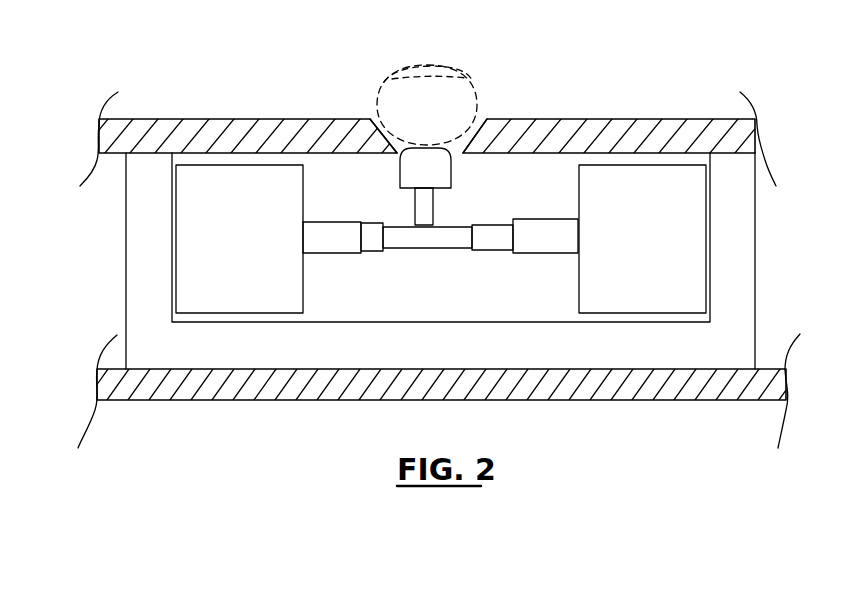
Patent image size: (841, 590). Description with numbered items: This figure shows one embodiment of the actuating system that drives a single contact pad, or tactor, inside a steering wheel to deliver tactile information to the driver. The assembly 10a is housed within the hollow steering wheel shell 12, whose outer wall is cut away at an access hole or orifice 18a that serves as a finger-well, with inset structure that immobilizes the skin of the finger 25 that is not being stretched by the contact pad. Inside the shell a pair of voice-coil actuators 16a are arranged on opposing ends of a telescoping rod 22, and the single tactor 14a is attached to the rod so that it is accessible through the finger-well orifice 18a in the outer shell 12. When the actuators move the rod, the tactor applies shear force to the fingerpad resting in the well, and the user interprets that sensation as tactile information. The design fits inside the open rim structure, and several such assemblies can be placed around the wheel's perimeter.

The sensor assembly 10a is at (90, 93).
The steering wheel shell 12 is at (182, 119).
The sensor head 14a is at (451, 175).
The voice-coil actuators 16a is at (242, 285).
The access hole or orifice 18a is at (494, 101).
The telescoping rod 22 is at (483, 250).
The finger 25 is at (352, 97).